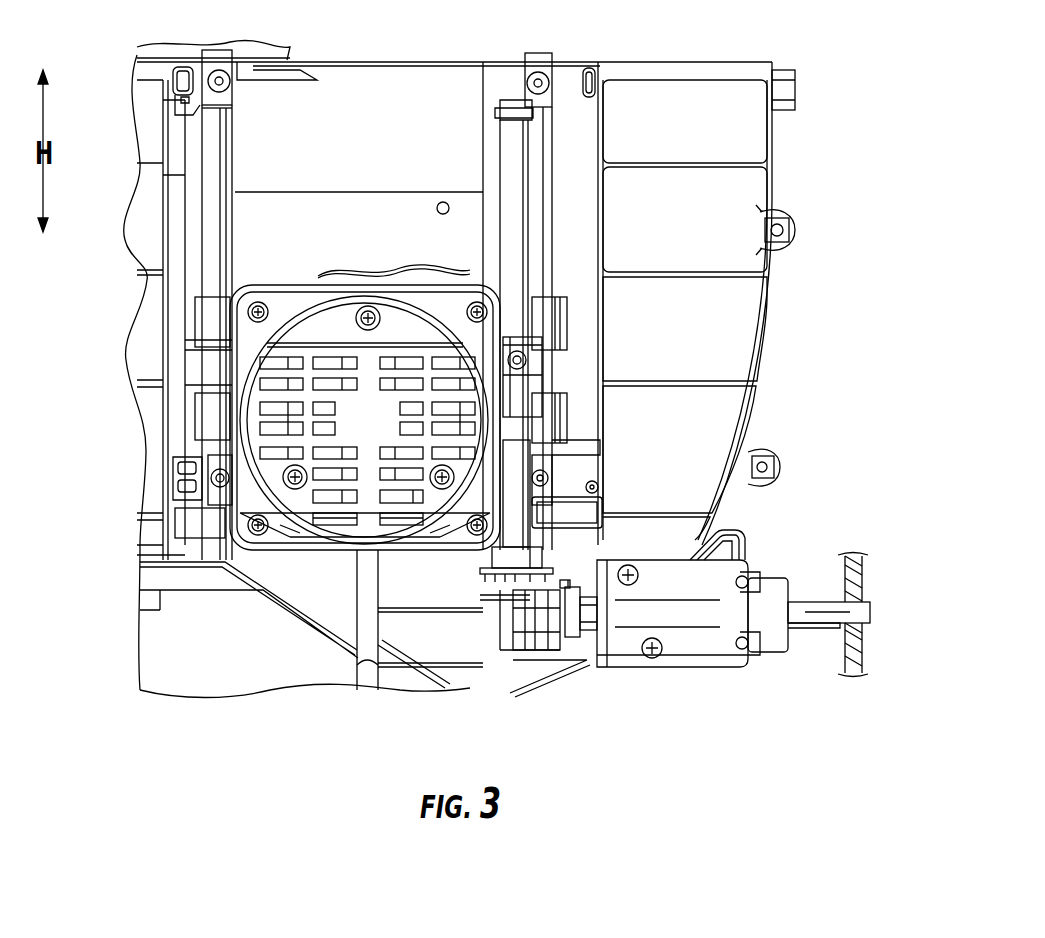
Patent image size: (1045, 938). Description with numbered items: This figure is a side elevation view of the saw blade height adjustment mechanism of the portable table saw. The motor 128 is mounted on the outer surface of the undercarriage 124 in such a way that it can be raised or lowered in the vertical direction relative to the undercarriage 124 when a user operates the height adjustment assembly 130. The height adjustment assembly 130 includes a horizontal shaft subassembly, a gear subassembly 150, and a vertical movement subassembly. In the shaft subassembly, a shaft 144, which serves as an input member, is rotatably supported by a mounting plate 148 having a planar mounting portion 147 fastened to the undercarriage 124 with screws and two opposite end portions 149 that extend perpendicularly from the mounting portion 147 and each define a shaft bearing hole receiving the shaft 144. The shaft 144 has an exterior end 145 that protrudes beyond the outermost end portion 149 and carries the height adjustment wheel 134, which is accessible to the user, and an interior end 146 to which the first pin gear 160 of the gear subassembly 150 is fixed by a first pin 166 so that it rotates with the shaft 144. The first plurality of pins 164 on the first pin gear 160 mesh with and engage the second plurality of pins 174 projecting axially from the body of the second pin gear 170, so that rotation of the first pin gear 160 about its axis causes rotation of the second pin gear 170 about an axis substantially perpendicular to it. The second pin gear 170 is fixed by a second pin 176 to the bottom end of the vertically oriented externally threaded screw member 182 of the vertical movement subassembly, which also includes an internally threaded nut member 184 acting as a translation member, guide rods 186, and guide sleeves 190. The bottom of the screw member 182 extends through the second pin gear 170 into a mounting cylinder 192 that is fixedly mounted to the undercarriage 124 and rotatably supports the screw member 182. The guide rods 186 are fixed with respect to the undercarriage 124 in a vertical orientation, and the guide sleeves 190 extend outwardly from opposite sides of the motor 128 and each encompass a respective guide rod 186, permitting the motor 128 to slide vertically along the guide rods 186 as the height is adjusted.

The undercarriage 124 is at (762, 300).
The motor 128 is at (182, 462).
The height adjustment assembly 130 is at (838, 545).
The height adjustment wheel 134 is at (860, 575).
The shaft 144 is at (703, 612).
The exterior end 145 is at (795, 625).
The interior end 146 is at (600, 663).
The mounting portion 147 is at (712, 575).
The mounting plate 148 is at (704, 715).
The end portions 149 is at (603, 662).
The gear subassembly 150 is at (587, 687).
The first pin gear 160 is at (590, 627).
The first plurality of pins 164 is at (548, 648).
The first pin 166 is at (578, 578).
The second pin gear 170 is at (520, 562).
The second plurality of pins 174 is at (495, 574).
The second pin 176 is at (400, 553).
The externally threaded screw member 182 is at (518, 515).
The internally threaded nut member 184 is at (522, 378).
The guide rods 186 is at (210, 128).
The guide sleeves 190 is at (200, 407).
The mounting cylinder 192 is at (470, 653).